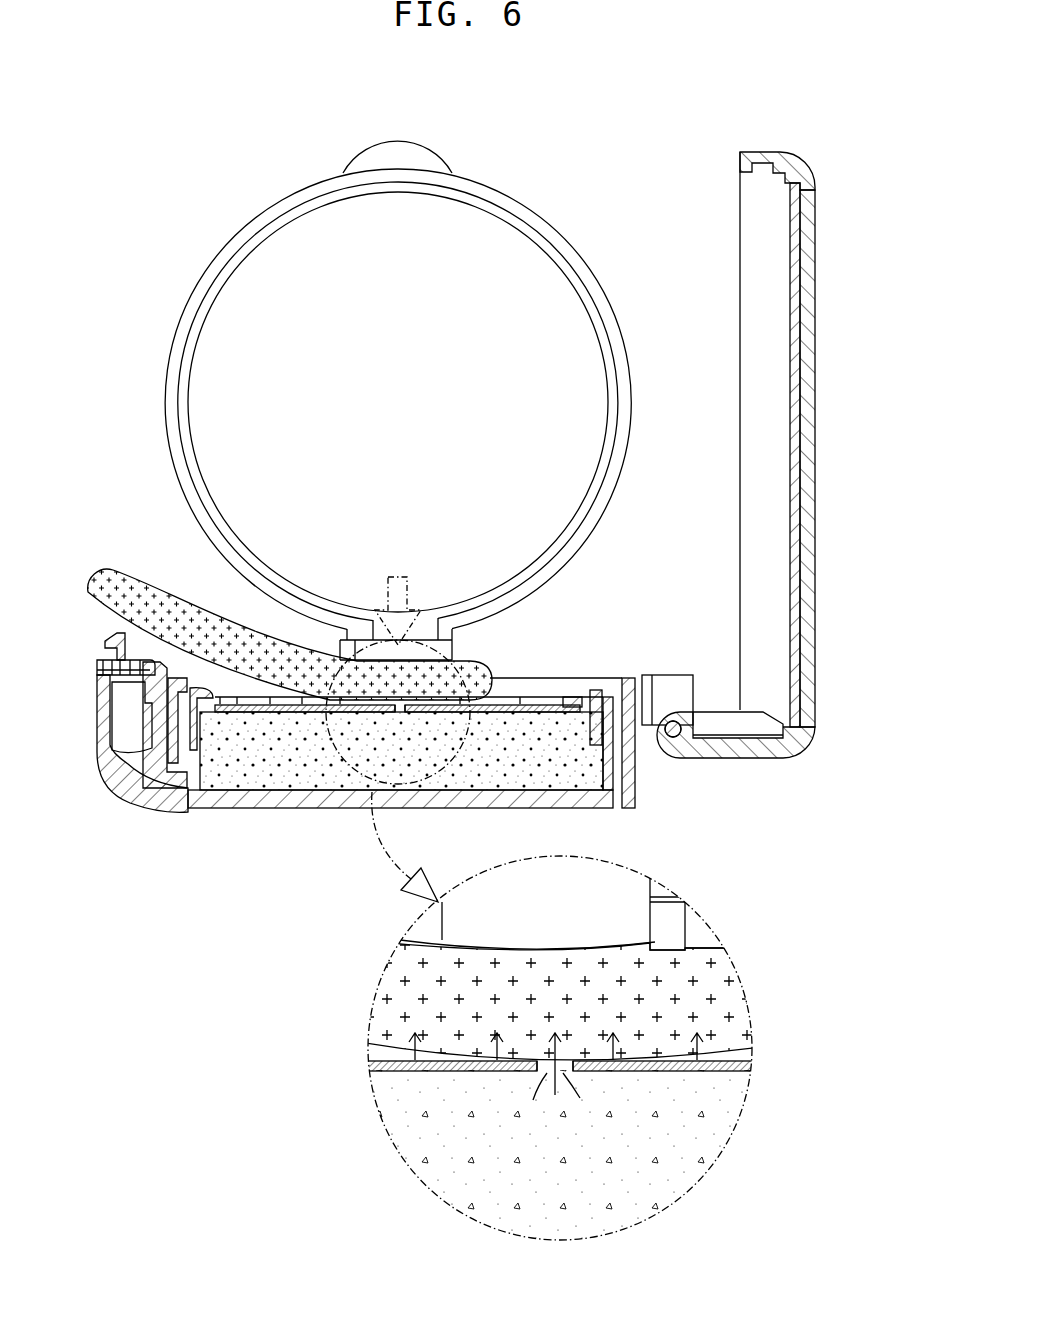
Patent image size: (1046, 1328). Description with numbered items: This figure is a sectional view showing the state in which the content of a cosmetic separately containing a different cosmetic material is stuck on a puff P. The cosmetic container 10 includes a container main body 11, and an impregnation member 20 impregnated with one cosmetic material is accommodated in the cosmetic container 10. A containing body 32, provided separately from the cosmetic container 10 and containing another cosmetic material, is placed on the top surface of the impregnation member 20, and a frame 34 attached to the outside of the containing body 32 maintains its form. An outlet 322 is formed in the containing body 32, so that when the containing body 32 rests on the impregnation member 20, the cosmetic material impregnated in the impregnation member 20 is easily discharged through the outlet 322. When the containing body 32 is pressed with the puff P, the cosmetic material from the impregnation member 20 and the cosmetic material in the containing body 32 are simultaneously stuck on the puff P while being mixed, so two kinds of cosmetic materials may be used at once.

The cosmetic container 10 is at (238, 822).
The container main body 11 is at (143, 792).
The impregnation member 20 is at (645, 1163).
The containing body 32 is at (443, 1072).
The outlet 322 is at (547, 1072).
The frame 34 is at (572, 697).
The puff P is at (683, 1010).